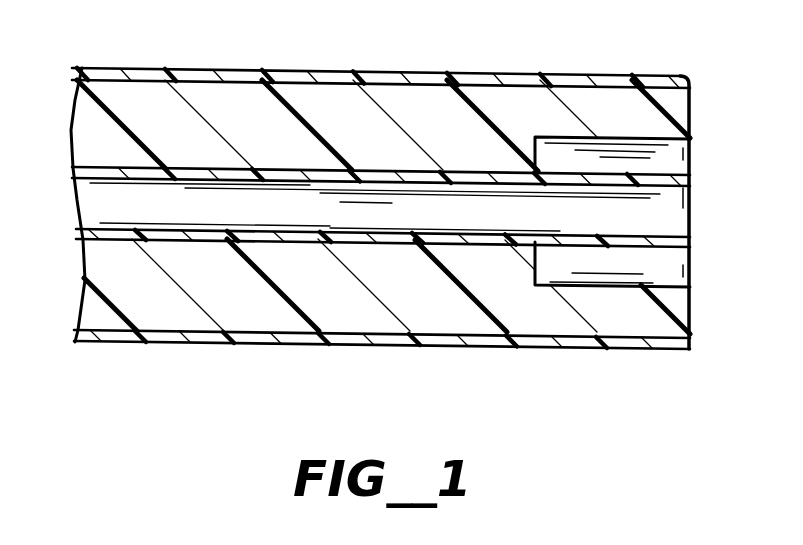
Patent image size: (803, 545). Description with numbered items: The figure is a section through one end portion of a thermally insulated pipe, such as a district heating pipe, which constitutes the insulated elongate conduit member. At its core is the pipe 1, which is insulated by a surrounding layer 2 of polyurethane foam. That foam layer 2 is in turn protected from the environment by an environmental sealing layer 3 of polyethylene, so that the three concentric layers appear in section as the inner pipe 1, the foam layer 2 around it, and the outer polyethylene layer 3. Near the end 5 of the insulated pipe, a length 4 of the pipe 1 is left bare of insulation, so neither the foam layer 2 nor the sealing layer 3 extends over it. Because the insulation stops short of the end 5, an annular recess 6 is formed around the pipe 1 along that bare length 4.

The pipe 1 is at (212, 172).
The surrounding layer of polyurethane foam 2 is at (207, 273).
The environmental sealing layer of polyethylene 3 is at (350, 86).
The length of pipe 4 is at (555, 246).
The end of the insulated pipe 5 is at (687, 223).
The annular recess 6 is at (563, 150).